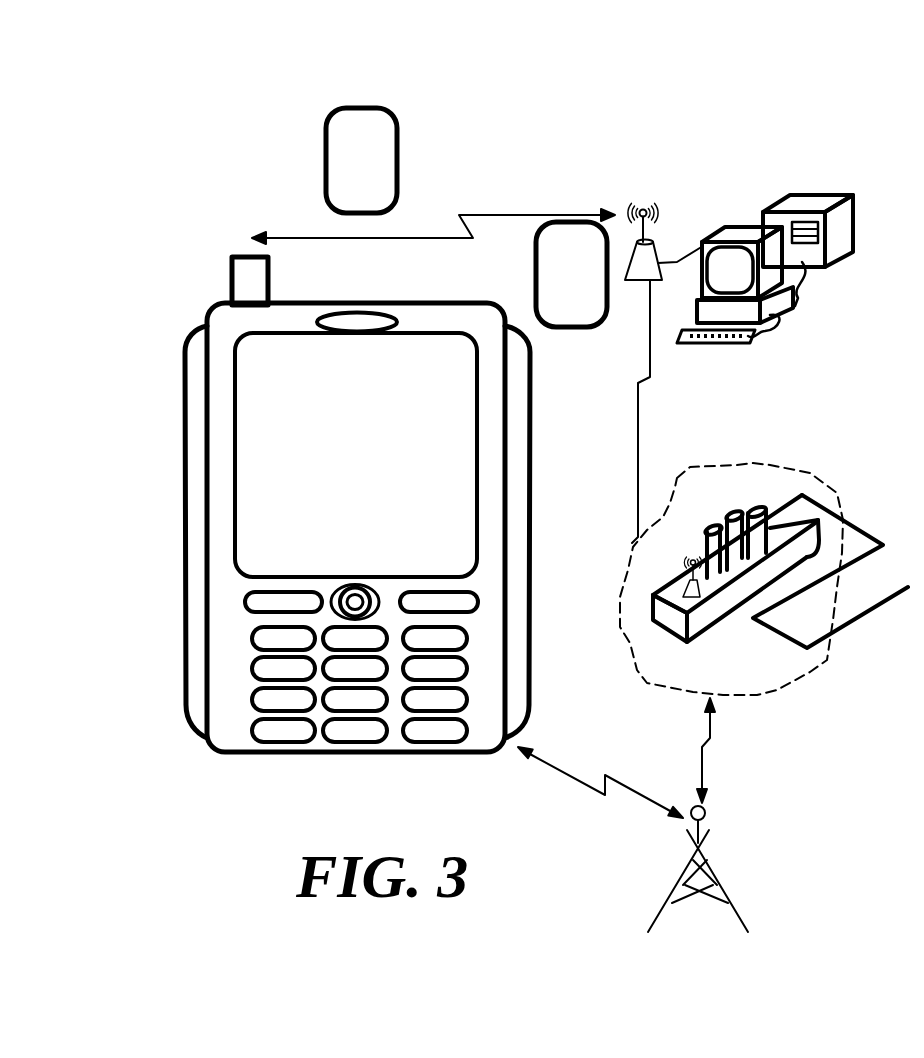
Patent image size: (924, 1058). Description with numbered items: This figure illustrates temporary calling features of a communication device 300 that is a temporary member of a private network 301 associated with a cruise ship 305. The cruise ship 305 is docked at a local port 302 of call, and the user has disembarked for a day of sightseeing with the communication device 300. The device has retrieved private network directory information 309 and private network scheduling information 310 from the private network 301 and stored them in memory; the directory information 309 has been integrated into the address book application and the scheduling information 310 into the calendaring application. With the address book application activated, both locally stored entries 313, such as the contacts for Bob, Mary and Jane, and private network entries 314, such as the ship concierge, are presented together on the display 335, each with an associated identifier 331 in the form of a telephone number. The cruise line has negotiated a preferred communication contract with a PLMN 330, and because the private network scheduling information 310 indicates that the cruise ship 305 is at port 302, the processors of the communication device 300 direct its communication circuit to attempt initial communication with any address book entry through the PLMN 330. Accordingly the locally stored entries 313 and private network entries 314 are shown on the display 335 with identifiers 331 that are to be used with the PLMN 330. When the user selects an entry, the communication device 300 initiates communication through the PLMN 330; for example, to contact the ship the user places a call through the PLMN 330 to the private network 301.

The communication device 300 is at (386, 504).
The private network 301 is at (755, 463).
The local port of call 302 is at (890, 600).
The cruise ship 305 is at (723, 607).
The private network directory information 309 is at (357, 150).
The private network scheduling information 310 is at (557, 327).
The locally stored entries 313 is at (437, 433).
The private network entries 314 is at (443, 545).
The PLMN 330 is at (713, 870).
The contact phone number entry 331 is at (428, 387).
The display 335 is at (411, 433).